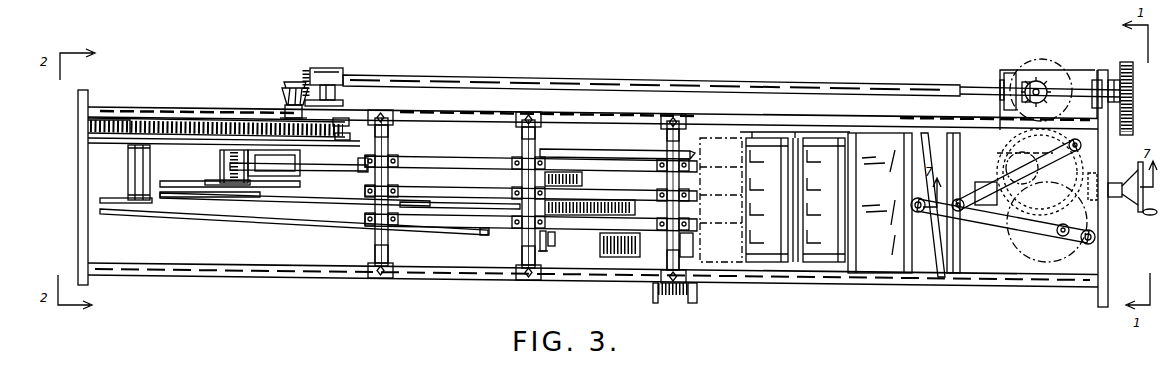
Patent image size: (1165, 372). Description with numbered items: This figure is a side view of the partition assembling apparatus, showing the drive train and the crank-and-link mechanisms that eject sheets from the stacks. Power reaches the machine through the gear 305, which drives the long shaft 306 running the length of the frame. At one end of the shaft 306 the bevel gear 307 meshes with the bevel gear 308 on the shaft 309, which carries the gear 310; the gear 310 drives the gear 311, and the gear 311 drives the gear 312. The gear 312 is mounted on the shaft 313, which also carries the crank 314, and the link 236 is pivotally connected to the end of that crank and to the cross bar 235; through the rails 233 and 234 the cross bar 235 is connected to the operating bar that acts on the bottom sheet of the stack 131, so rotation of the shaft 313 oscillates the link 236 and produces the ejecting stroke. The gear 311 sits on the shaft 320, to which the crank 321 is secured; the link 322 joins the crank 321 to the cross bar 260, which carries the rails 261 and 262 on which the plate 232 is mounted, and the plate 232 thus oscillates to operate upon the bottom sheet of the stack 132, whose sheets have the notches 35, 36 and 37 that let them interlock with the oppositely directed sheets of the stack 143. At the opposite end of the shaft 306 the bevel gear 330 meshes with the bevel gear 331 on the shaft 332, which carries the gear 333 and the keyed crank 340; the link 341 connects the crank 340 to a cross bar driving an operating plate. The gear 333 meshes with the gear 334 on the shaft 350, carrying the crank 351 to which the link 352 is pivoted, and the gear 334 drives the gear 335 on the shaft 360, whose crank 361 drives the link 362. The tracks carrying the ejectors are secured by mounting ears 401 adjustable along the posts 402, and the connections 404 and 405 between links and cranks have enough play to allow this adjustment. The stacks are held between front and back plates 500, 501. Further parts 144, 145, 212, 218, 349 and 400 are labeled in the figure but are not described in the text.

The notch 35 is at (757, 238).
The notch 36 is at (791, 210).
The notch 37 is at (795, 197).
The stack 131 is at (763, 185).
The stack 132 is at (823, 185).
The stack 143 is at (676, 300).
The drum 144 is at (624, 268).
The drum 145 is at (619, 214).
The bearing 212 is at (1008, 75).
The hand crank 218 is at (1105, 222).
The plate 232 is at (933, 277).
The rail 233 is at (875, 133).
The rail 234 is at (882, 272).
The cross bar 235 is at (902, 176).
The link 236 is at (1030, 232).
The cross bar 260 is at (957, 258).
The rail 261 is at (957, 270).
The rail 262 is at (942, 133).
The gear 305 is at (1128, 68).
The shaft 306 is at (955, 75).
The bevel gear 307 is at (1037, 80).
The bevel gear 308 is at (1044, 86).
The shaft 309 is at (1047, 90).
The gear 310 is at (1012, 65).
The gear 311 is at (1097, 148).
The gear 312 is at (1082, 250).
The shaft 313 is at (1047, 228).
The crank 314 is at (1070, 225).
The shaft 320 is at (1016, 175).
The crank 321 is at (1040, 148).
The link 322 is at (1008, 166).
The bevel gear 330 is at (318, 68).
The bevel gear 331 is at (296, 82).
The shaft 332 is at (352, 137).
The gear 333 is at (340, 121).
The gear 334 is at (210, 125).
The gear 335 is at (105, 122).
The crank 340 is at (274, 162).
The link 341 is at (292, 188).
The bracket 349 is at (362, 165).
The shaft 350 is at (247, 140).
The crank 351 is at (205, 183).
The link 352 is at (238, 200).
The shaft 360 is at (125, 138).
The crank 361 is at (128, 198).
The link 362 is at (220, 222).
The bar 400 is at (500, 215).
The mounting members or ears 401 is at (386, 158).
The post 402 is at (390, 185).
The connection 404 is at (350, 165).
The connection 405 is at (130, 202).
The front plate 500 is at (556, 240).
The back plate 501 is at (550, 250).